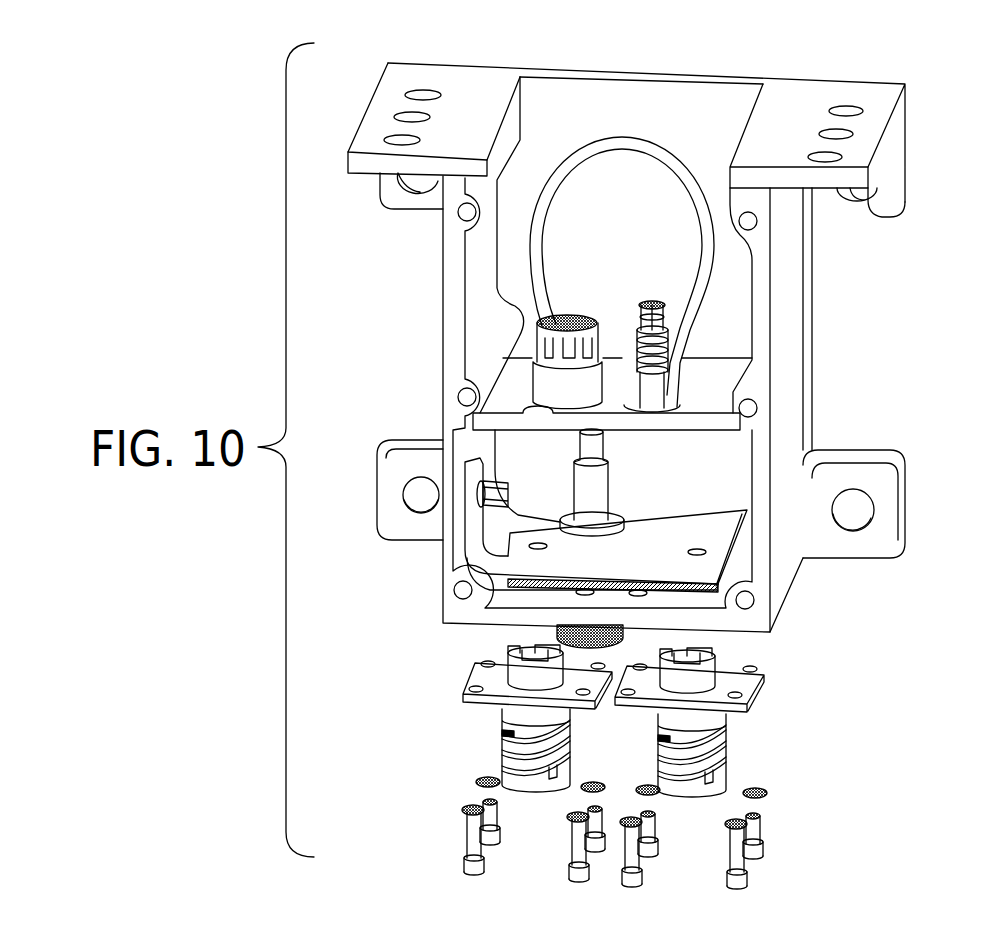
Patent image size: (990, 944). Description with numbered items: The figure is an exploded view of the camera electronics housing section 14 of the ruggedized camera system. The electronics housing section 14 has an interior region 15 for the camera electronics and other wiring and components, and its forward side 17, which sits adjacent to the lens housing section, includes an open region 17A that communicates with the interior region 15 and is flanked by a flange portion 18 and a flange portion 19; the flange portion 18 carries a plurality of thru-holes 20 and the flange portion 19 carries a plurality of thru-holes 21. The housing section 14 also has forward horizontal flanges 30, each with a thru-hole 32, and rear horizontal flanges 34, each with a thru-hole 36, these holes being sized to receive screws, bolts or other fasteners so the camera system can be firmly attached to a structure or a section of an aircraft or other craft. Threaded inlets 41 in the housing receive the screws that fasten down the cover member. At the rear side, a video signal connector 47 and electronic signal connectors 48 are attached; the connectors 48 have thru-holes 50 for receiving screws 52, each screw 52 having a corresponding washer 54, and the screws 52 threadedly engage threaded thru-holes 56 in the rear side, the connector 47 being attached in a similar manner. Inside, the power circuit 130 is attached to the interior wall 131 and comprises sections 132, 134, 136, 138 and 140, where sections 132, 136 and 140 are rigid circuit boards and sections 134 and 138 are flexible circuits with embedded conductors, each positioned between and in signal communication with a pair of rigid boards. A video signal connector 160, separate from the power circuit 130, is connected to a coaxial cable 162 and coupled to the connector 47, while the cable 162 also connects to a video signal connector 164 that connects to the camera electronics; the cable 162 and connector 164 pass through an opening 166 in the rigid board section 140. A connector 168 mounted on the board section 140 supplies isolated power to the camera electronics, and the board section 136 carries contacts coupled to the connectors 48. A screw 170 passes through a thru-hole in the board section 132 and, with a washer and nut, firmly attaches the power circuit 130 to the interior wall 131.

The camera electronics housing section 14 is at (738, 72).
The interior region 15 is at (727, 300).
The forward side 17 is at (818, 90).
The open region 17A is at (512, 90).
The flange portion 18 is at (502, 80).
The flange portion 19 is at (788, 125).
The thru-holes 20 is at (393, 140).
The thru-holes 21 is at (838, 155).
The forward horizontal flanges 30 is at (383, 190).
The thru-hole 32 is at (425, 182).
The rear horizontal flanges 34 is at (378, 510).
The thru-hole 36 is at (422, 485).
The threaded inlets 41 is at (463, 218).
The video signal connector 47 is at (560, 637).
The electronic signal connectors 48 is at (503, 735).
The thru-holes 50 is at (465, 690).
The screws 52 is at (472, 862).
The washer 54 is at (476, 782).
The threaded thru-holes 56 is at (640, 596).
The power circuit 130 is at (722, 555).
The interior wall 131 is at (470, 440).
The rigid circuit board section 132 is at (480, 505).
The flexible circuit section 134 is at (480, 530).
The rigid circuit board section 136 is at (580, 566).
The flexible circuit section 138 is at (728, 470).
The rigid circuit board section 140 is at (713, 370).
The video signal connector 160 is at (580, 483).
The coaxial cable 162 is at (618, 130).
The video signal connector 164 is at (655, 300).
The opening 166 is at (628, 398).
The connector 168 is at (572, 316).
The screw 170 is at (468, 505).